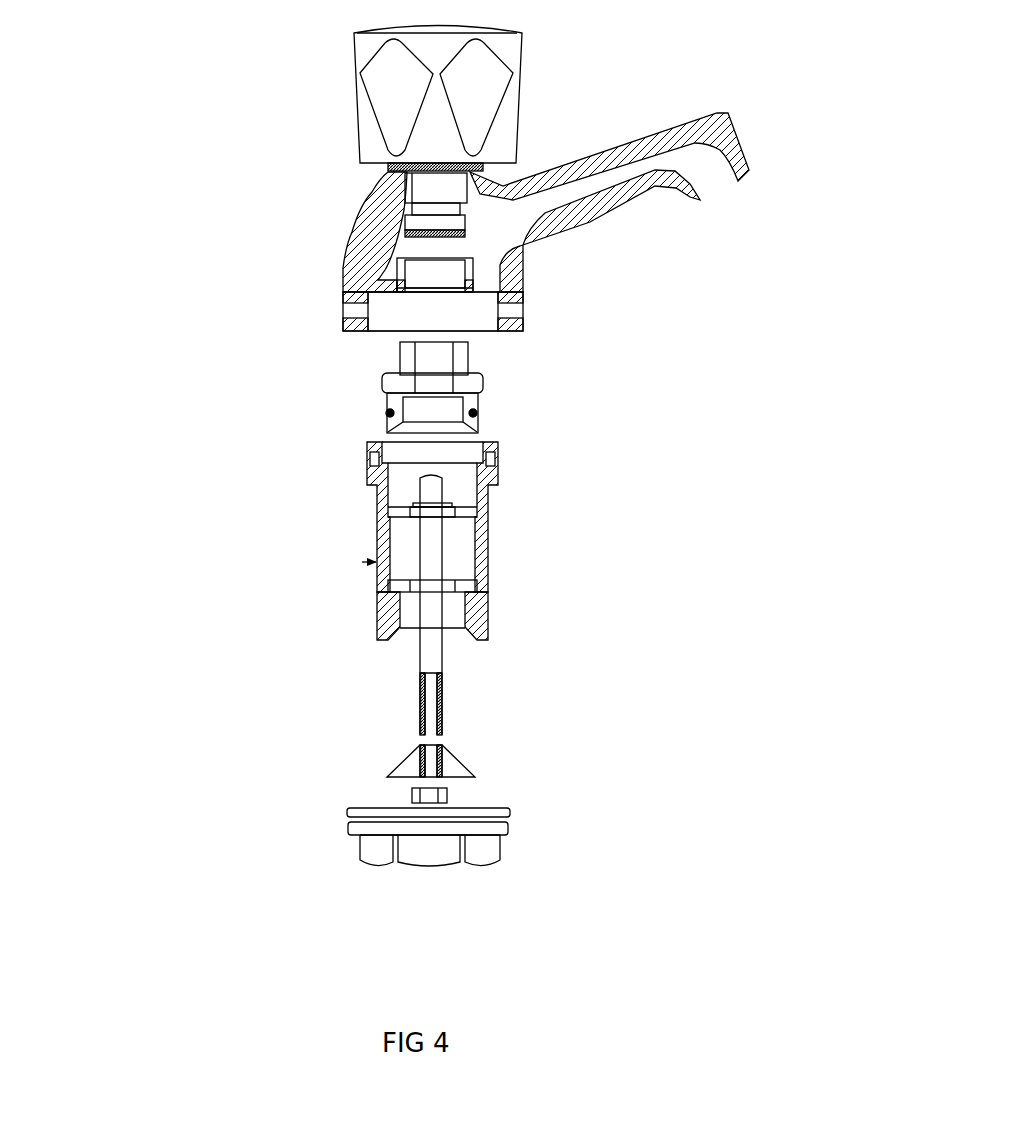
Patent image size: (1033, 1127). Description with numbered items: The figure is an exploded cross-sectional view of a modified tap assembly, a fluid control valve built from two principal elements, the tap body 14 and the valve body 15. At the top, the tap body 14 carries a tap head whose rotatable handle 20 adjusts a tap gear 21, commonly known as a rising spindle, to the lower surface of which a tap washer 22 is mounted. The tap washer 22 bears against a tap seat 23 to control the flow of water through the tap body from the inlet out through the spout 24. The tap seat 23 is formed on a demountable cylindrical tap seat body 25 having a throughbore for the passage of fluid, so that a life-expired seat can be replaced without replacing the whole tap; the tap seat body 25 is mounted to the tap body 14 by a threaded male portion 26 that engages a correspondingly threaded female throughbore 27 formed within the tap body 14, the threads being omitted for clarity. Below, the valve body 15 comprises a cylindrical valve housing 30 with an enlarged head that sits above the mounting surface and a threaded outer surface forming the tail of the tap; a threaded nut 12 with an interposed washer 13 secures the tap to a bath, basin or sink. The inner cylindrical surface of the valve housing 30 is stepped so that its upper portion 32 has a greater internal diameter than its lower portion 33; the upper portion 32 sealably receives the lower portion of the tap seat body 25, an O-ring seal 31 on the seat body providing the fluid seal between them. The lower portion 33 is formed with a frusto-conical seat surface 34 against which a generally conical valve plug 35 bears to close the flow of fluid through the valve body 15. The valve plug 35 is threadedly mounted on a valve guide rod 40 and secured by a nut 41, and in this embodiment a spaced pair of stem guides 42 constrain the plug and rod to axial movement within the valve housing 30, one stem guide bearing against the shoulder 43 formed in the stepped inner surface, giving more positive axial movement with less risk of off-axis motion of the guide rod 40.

The rotatable handle 20 is at (332, 96).
The tap gear 21 is at (433, 185).
The tap washer 22 is at (450, 237).
The tap body 14 is at (333, 232).
The spout 24 is at (707, 168).
The threaded female throughbore 27 is at (398, 275).
The tap seat 23 is at (450, 338).
The threaded male portion 26 is at (405, 360).
The tap seat body 25 is at (490, 387).
The O-ring seal 31 is at (489, 413).
The valve body 15 is at (402, 559).
The valve housing 30 is at (373, 512).
The upper portion 32 is at (462, 500).
The stem guides 42 is at (466, 510).
The shoulder 43 is at (472, 597).
The lower portion 33 is at (476, 597).
The frusto-conical seat surface 34 is at (463, 643).
The valve guide rod 40 is at (434, 665).
The valve plug 35 is at (474, 758).
The nut 41 is at (401, 795).
The washer 13 is at (522, 815).
The threaded nut 12 is at (483, 852).